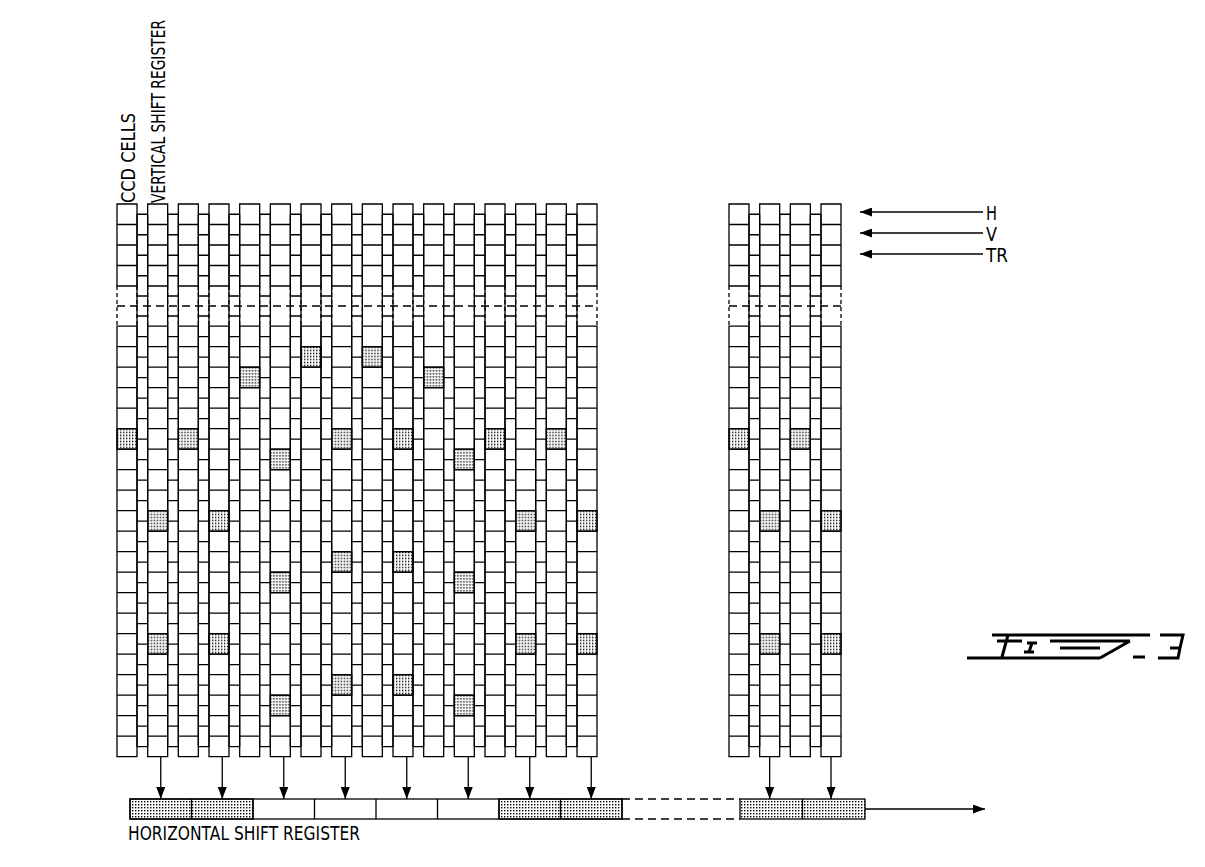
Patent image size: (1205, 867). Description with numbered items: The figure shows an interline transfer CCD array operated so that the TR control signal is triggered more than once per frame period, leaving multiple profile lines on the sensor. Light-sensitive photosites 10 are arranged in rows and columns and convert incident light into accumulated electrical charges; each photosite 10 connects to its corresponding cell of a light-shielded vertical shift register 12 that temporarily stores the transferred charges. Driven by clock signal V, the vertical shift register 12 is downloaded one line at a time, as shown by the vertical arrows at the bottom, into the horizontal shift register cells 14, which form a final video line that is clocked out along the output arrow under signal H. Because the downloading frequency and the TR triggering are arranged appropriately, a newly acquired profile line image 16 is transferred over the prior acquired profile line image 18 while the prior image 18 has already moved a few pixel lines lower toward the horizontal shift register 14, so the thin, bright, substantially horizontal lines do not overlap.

The photosites 10 is at (311, 210).
The vertical shift register 12 is at (402, 210).
The horizontal shift register cells 14 is at (403, 815).
The acquired profile line image 16 is at (343, 560).
The prior acquired profile line image 18 is at (343, 683).